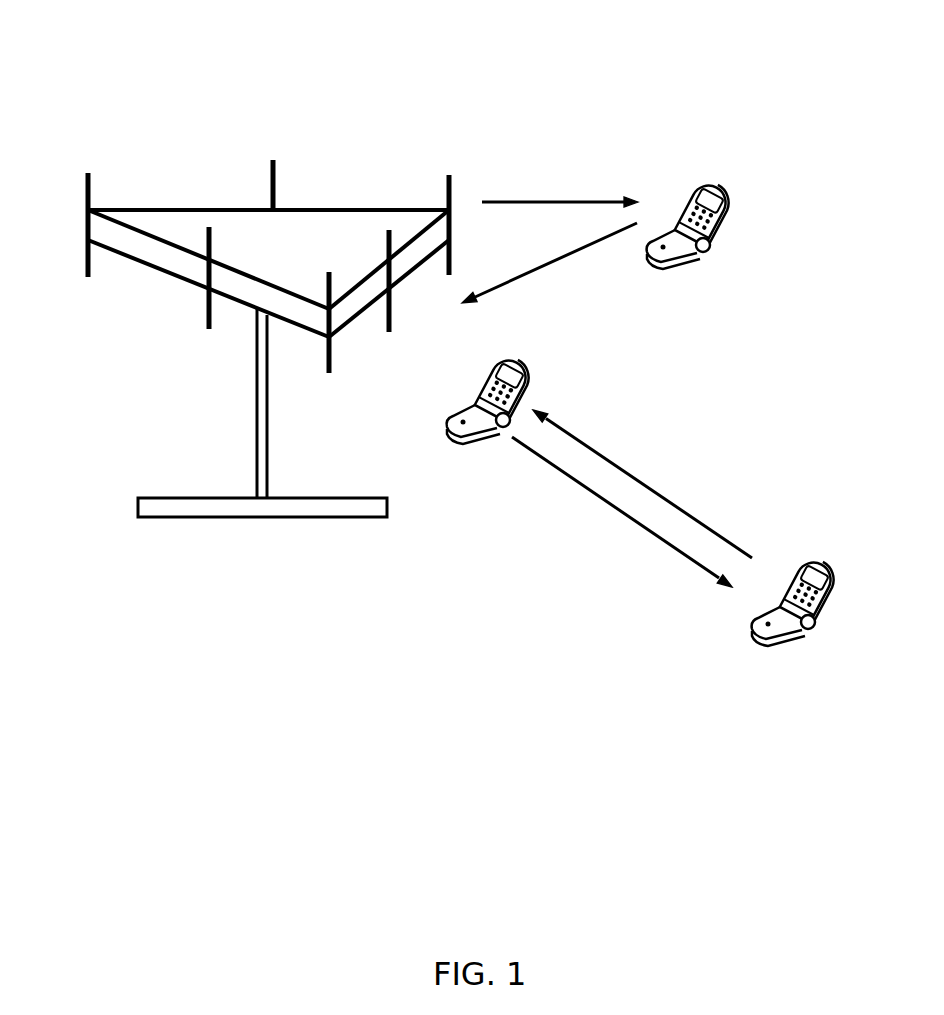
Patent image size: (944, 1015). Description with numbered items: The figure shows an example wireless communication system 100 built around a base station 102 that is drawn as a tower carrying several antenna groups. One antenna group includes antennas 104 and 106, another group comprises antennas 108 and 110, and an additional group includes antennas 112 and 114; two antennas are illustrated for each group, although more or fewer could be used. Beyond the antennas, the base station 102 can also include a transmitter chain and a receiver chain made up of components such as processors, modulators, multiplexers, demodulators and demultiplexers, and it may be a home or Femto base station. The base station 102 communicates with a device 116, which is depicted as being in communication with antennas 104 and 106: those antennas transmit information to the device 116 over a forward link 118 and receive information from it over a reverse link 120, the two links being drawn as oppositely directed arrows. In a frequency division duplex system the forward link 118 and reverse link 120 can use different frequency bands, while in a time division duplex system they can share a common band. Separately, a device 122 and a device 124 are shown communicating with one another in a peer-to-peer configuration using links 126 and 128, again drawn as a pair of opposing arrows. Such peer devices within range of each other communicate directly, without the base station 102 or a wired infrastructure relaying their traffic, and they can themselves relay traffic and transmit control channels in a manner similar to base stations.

The wireless communication system 100 is at (810, 70).
The base station 102 is at (310, 517).
The antenna 104 is at (450, 174).
The antenna 106 is at (389, 332).
The antenna 108 is at (329, 373).
The antenna 110 is at (208, 330).
The antenna 112 is at (86, 172).
The antenna 114 is at (271, 160).
The device 116 is at (708, 185).
The forward link 118 is at (540, 200).
The reverse link 120 is at (538, 272).
The device 122 is at (517, 360).
The device 124 is at (817, 560).
The link 126 is at (623, 517).
The link 128 is at (633, 477).